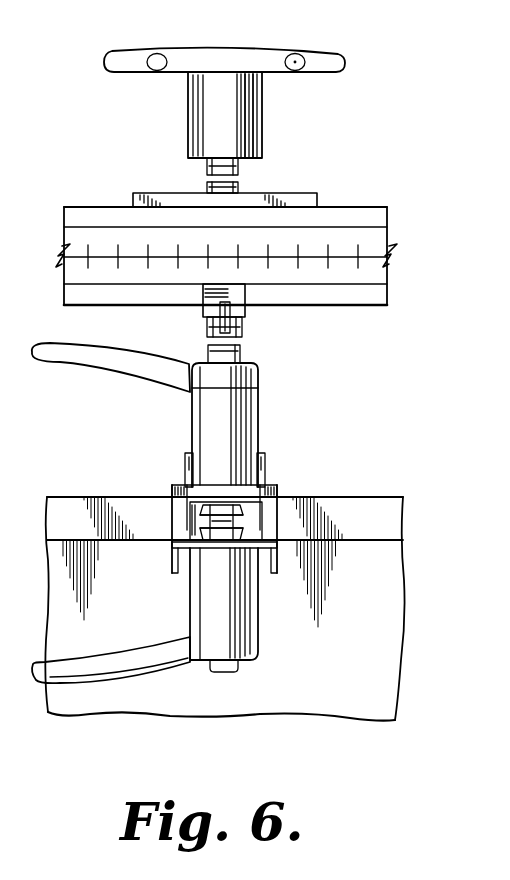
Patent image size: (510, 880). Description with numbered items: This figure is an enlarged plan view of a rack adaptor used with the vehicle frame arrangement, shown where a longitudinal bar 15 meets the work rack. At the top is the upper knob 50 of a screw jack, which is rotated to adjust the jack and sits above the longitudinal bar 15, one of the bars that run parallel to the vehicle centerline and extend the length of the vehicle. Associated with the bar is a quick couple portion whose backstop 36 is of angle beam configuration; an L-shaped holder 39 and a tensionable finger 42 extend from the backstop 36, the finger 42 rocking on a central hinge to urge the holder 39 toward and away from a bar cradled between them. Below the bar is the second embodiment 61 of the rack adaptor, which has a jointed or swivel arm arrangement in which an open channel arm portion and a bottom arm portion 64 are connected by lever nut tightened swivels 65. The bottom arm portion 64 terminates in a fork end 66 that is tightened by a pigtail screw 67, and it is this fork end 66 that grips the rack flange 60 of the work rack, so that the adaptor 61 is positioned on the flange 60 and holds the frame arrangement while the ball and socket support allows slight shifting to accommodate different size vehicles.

The upper knob 50 is at (230, 48).
The backstop 36 is at (280, 193).
The longitudinal bar 15 is at (345, 207).
The L-shaped holder 39 is at (236, 287).
The tensionable finger 42 is at (220, 309).
The pigtail screw 67 is at (92, 364).
The second embodiment of rack adaptor 61 is at (262, 460).
The lever nut tightened swivel 65 is at (175, 488).
The bottom arm portion 64 is at (173, 512).
The fork end 66 is at (278, 517).
The rack flange 60 is at (392, 633).